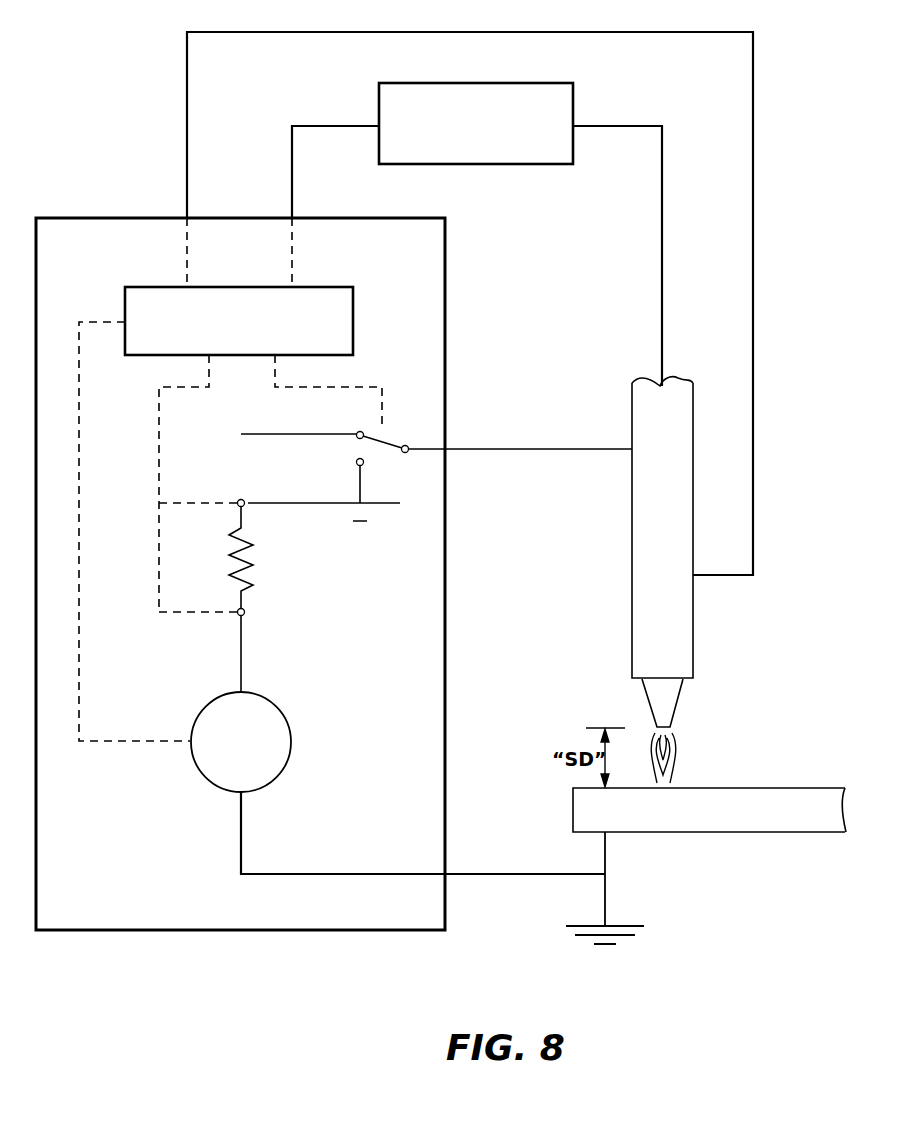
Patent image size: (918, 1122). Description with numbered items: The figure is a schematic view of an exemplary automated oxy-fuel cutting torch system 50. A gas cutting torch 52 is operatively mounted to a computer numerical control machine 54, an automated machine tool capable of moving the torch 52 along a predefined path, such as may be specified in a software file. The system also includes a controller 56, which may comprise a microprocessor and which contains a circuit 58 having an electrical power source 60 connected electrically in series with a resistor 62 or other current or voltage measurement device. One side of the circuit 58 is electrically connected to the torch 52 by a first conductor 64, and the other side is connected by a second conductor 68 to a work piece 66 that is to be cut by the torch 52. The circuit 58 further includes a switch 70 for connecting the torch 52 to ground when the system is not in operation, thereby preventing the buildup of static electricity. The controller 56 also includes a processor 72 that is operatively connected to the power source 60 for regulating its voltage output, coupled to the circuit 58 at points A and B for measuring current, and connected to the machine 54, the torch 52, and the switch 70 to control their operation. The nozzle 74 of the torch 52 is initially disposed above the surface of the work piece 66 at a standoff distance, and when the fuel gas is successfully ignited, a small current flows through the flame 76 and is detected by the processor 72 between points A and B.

The automated oxy-fuel cutting torch system 50 is at (108, 76).
The gas cutting torch 52 is at (674, 550).
The computer numerical control (CNC) machine 54 is at (489, 139).
The controller 56 is at (84, 895).
The circuit 58 is at (238, 832).
The electrical power source 60 is at (254, 755).
The resistor 62 is at (250, 578).
The first conductor 64 is at (488, 451).
The work piece 66 is at (726, 823).
The second conductor 68 is at (541, 870).
The switch 70 is at (350, 452).
The processor 72 is at (251, 335).
The nozzle 74 is at (678, 703).
The flame 76 is at (680, 755).